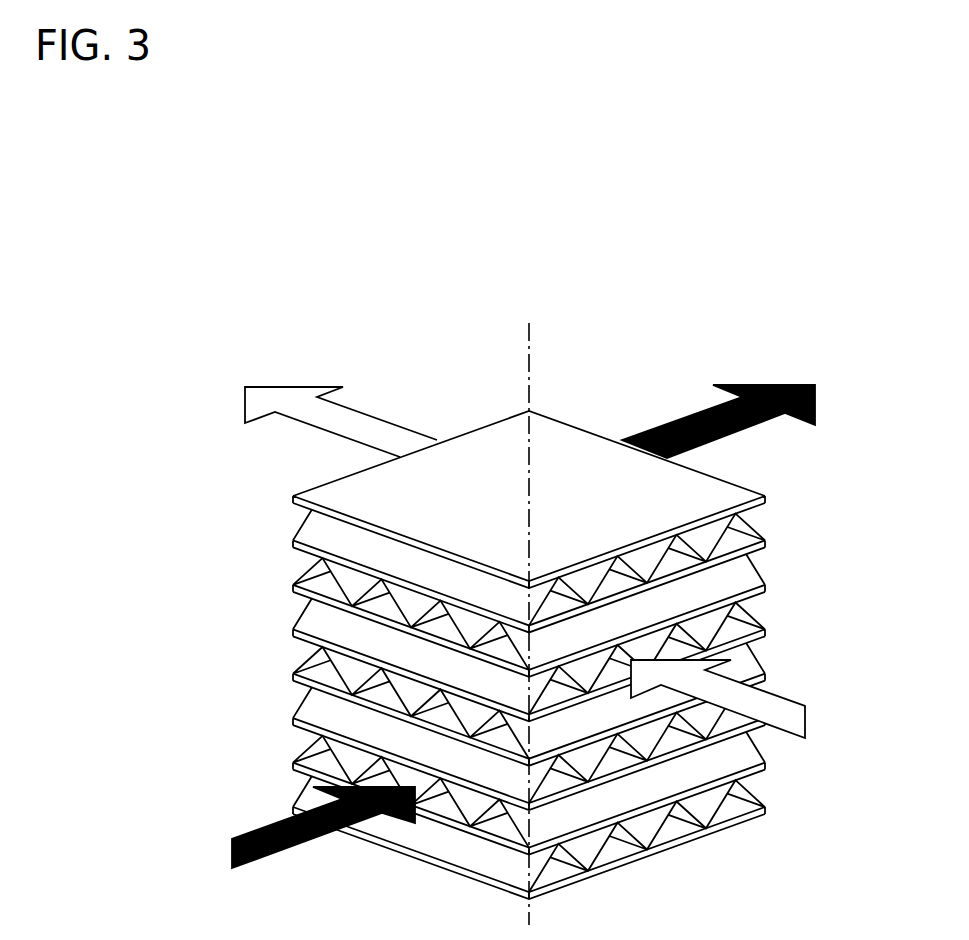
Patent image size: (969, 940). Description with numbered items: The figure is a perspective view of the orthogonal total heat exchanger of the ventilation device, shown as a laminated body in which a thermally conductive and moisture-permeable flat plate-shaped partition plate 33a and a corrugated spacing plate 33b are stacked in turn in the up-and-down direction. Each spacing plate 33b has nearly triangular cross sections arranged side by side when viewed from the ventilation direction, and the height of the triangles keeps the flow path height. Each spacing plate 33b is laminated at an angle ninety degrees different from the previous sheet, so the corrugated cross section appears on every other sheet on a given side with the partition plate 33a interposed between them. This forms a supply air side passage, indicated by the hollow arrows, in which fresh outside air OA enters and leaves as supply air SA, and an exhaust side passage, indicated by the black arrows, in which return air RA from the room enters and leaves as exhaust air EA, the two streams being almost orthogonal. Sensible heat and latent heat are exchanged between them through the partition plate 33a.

The partition plate 33a is at (579, 447).
The spacing plate 33b is at (757, 519).
The supply air SA is at (324, 408).
The exhaust air EA is at (733, 408).
The outside air OA is at (738, 709).
The return air RA is at (306, 835).